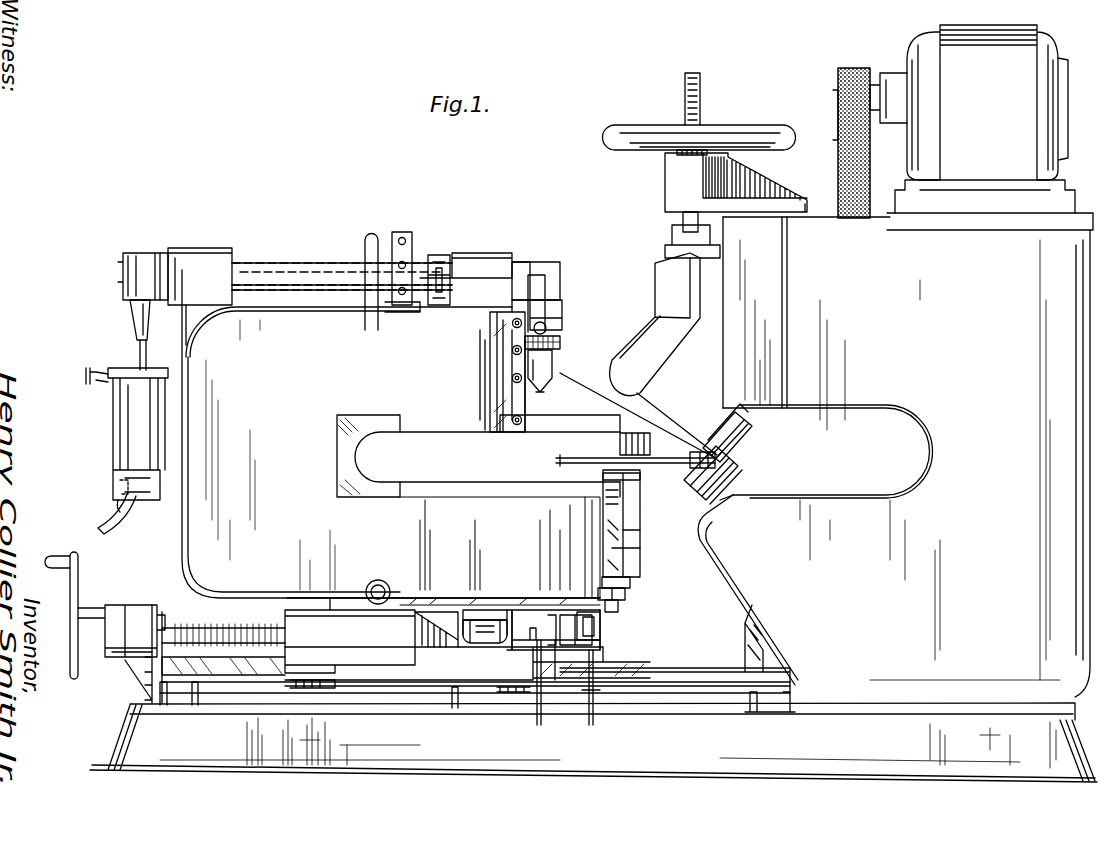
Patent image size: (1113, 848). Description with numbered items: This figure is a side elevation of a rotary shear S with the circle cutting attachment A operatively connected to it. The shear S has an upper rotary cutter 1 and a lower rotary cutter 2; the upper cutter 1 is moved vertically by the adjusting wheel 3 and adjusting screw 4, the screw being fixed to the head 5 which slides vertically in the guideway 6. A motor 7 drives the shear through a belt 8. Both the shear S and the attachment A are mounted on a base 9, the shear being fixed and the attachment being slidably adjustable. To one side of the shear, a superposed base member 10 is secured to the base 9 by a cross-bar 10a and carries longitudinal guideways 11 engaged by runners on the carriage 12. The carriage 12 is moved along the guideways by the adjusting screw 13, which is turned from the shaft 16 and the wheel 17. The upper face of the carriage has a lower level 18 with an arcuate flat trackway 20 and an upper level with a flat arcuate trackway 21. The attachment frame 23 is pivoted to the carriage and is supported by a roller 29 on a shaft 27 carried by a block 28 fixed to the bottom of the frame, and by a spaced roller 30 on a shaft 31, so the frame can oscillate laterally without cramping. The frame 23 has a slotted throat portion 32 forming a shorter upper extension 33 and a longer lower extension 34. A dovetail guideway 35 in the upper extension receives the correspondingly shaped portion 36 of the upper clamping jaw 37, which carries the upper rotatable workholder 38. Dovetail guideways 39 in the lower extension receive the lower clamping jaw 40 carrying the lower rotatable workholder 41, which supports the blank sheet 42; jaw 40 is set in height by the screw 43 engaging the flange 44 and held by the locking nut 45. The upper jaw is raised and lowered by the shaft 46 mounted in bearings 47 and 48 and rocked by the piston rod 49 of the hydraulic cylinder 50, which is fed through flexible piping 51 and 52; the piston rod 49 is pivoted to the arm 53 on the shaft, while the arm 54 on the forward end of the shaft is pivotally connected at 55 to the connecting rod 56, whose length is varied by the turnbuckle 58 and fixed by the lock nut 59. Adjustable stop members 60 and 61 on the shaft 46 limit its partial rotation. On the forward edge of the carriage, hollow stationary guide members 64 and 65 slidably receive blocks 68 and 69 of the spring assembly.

The upper rotary cutter 1 is at (754, 436).
The lower rotary cutter 2 is at (735, 470).
The adjusting wheel 3 is at (752, 125).
The adjusting screw 4 is at (695, 73).
The head 5 is at (663, 354).
The guideway 6 is at (755, 312).
The motor 7 is at (972, 119).
The belt 8 is at (850, 68).
The base 9 is at (593, 742).
The superposed base member 10 is at (612, 682).
The cross-bar 10a is at (180, 715).
The longitudinal guideways 11 is at (240, 662).
The carriage 12 is at (350, 641).
The adjusting screw 13 is at (188, 626).
The shaft 16 is at (96, 605).
The wheel 17 is at (80, 566).
The lower level 18 is at (432, 612).
The arcuate flat trackway 20 is at (526, 620).
The flat arcuate trackway 21 is at (304, 605).
The attachment frame 23 is at (391, 451).
The block 28 is at (466, 610).
The roller 29 is at (482, 620).
The shaft 27 is at (508, 608).
The roller 30 is at (388, 585).
The shaft 31 is at (358, 600).
The slotted throat portion 32 is at (478, 456).
The upper extension 33 is at (490, 340).
The lower extension 34 is at (500, 550).
The dovetail guideway 35 is at (504, 392).
The correspondingly shaped portion 36 is at (510, 444).
The upper clamping jaw 37 is at (548, 400).
The upper rotatable workholder 38 is at (637, 447).
The dovetail guideways 39 is at (642, 548).
The lower clamping jaw 40 is at (642, 522).
The lower rotatable workholder 41 is at (600, 468).
The blank sheet 42 is at (672, 457).
The screw 43 is at (632, 580).
The flange 44 is at (628, 594).
The locking nut 45 is at (620, 606).
The shaft 46 is at (254, 268).
The bearing 47 is at (472, 253).
The bearing 48 is at (203, 250).
The piston rod 49 is at (122, 350).
The hydraulic cylinder 50 is at (112, 418).
The flexible piping 51 is at (84, 376).
The flexible piping 52 is at (112, 498).
The arm 53 is at (118, 266).
The arm 54 is at (548, 300).
The pivotal connection 55 is at (564, 316).
The connecting rod 56 is at (548, 330).
The turnbuckle 58 is at (512, 360).
The lock nut 59 is at (562, 342).
The adjustable stop member 60 is at (437, 262).
The adjustable stop member 61 is at (392, 268).
The hollow stationary guide member 64 is at (604, 620).
The hollow stationary guide member 65 is at (565, 615).
The block 68 is at (588, 703).
The block 69 is at (548, 610).
The circle cutting attachment A is at (284, 323).
The rotary shear S is at (895, 455).